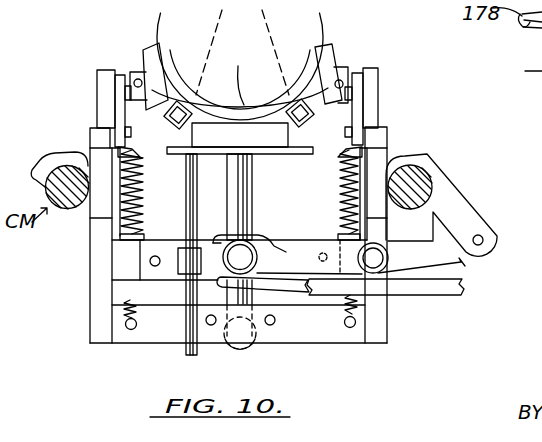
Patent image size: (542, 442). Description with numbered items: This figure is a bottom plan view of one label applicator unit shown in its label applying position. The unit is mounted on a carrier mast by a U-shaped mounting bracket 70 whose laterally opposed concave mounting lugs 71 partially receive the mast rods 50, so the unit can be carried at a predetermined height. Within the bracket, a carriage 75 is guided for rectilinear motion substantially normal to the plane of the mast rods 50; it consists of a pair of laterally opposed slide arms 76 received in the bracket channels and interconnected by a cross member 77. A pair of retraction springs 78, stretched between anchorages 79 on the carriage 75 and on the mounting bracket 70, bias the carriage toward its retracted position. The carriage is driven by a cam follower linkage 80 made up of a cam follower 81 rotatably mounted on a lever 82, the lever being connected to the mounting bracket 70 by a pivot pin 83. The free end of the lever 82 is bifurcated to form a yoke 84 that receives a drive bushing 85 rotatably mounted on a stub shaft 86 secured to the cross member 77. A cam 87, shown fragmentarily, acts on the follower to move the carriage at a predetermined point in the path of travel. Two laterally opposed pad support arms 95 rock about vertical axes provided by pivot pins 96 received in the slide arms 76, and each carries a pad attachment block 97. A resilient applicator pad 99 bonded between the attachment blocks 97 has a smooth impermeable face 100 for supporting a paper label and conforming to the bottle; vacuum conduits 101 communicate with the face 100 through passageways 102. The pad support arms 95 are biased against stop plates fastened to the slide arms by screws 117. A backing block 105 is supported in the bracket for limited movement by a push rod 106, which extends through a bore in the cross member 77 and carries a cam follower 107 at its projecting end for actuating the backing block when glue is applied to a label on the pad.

The mast rods 50 is at (70, 173).
The mounting bracket 70 is at (100, 307).
The mounting lugs 71 is at (36, 170).
The carriage 75 is at (132, 258).
The slide arms 76 is at (110, 205).
The cross member 77 is at (178, 250).
The retraction springs 78 is at (143, 196).
The anchorages 79 is at (132, 331).
The cam follower linkage 80 is at (301, 241).
The cam follower 81 is at (384, 250).
The lever 82 is at (456, 263).
The pivot pin 83 is at (483, 237).
The yoke 84 is at (258, 236).
The drive bushing 85 is at (213, 238).
The stub shaft 86 is at (243, 257).
The cam 87 is at (406, 287).
The pad support arms 95 is at (116, 77).
The pivot pins 96 is at (137, 80).
The pad attachment block 97 is at (168, 80).
The applicator pad 99 is at (329, 31).
The label receiving face 100 is at (172, 50).
The vacuum conduits 101 is at (251, 74).
The passageways 102 is at (225, 40).
The backing block 105 is at (240, 138).
The push rod 106 is at (243, 188).
The cam follower 107 is at (255, 349).
The screws 117 is at (243, 123).